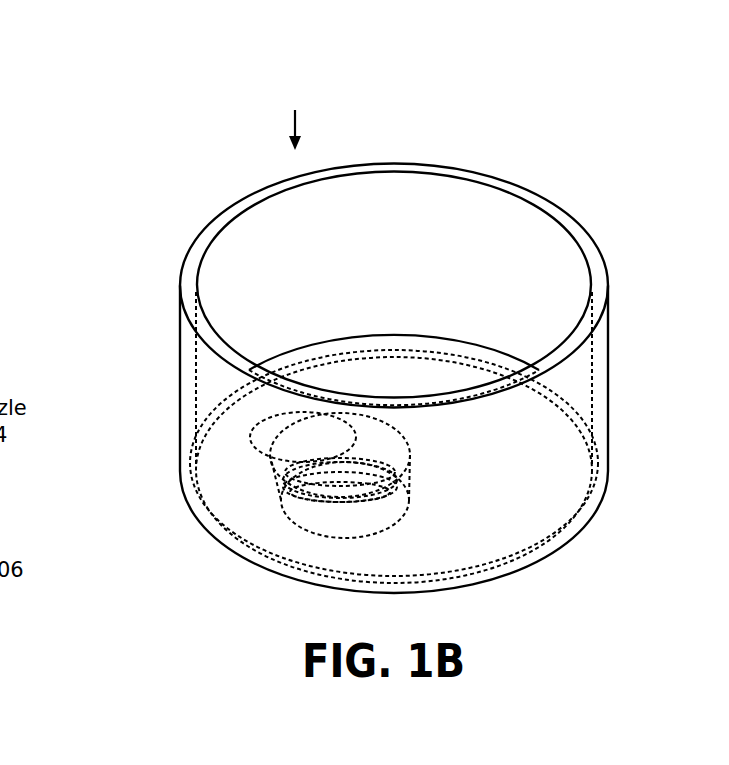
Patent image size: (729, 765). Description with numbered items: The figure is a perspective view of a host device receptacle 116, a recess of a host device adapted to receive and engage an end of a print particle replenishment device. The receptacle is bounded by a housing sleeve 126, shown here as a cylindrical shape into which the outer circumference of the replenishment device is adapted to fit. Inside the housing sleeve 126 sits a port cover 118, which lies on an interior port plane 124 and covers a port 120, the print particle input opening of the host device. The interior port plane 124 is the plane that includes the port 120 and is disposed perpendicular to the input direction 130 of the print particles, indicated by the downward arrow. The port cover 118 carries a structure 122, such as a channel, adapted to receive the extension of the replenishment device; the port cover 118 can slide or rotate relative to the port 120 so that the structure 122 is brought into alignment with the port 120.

The host device receptacle 116 is at (237, 122).
The port cover 118 is at (530, 527).
The port 120 is at (253, 432).
The structure 122 is at (447, 477).
The interior port plane 124 is at (233, 468).
The housing sleeve 126 is at (180, 287).
The input direction 130 is at (297, 120).